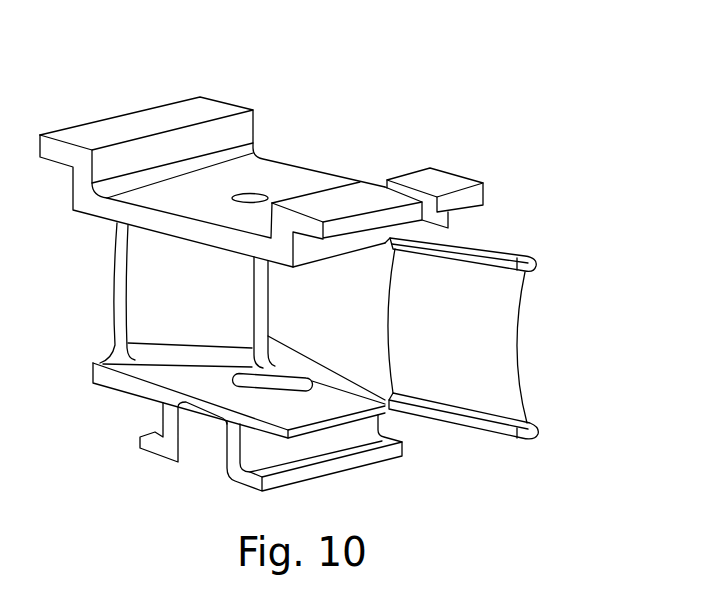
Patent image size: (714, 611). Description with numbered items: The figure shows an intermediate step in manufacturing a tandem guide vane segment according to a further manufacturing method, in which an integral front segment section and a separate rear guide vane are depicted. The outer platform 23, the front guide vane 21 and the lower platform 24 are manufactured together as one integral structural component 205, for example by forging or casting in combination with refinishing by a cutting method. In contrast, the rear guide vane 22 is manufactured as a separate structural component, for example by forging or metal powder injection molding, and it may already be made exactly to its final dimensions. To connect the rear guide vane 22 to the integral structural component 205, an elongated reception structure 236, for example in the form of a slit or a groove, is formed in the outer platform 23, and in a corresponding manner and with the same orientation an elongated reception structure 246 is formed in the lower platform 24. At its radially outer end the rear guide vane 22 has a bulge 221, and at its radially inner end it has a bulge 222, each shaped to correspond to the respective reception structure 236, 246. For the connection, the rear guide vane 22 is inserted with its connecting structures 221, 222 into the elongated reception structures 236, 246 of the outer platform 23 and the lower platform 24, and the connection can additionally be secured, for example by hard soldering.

The integral structural component 205 is at (101, 103).
The outer platform 23 is at (297, 170).
The front guide vane 21 is at (113, 277).
The rear guide vane 22 is at (520, 334).
The bulge at radially outer end 221 is at (520, 250).
The bulge at radially inner end 222 is at (495, 434).
The elongated reception structure 236 is at (384, 254).
The lower platform 24 is at (127, 393).
The elongated reception structure 246 is at (308, 385).